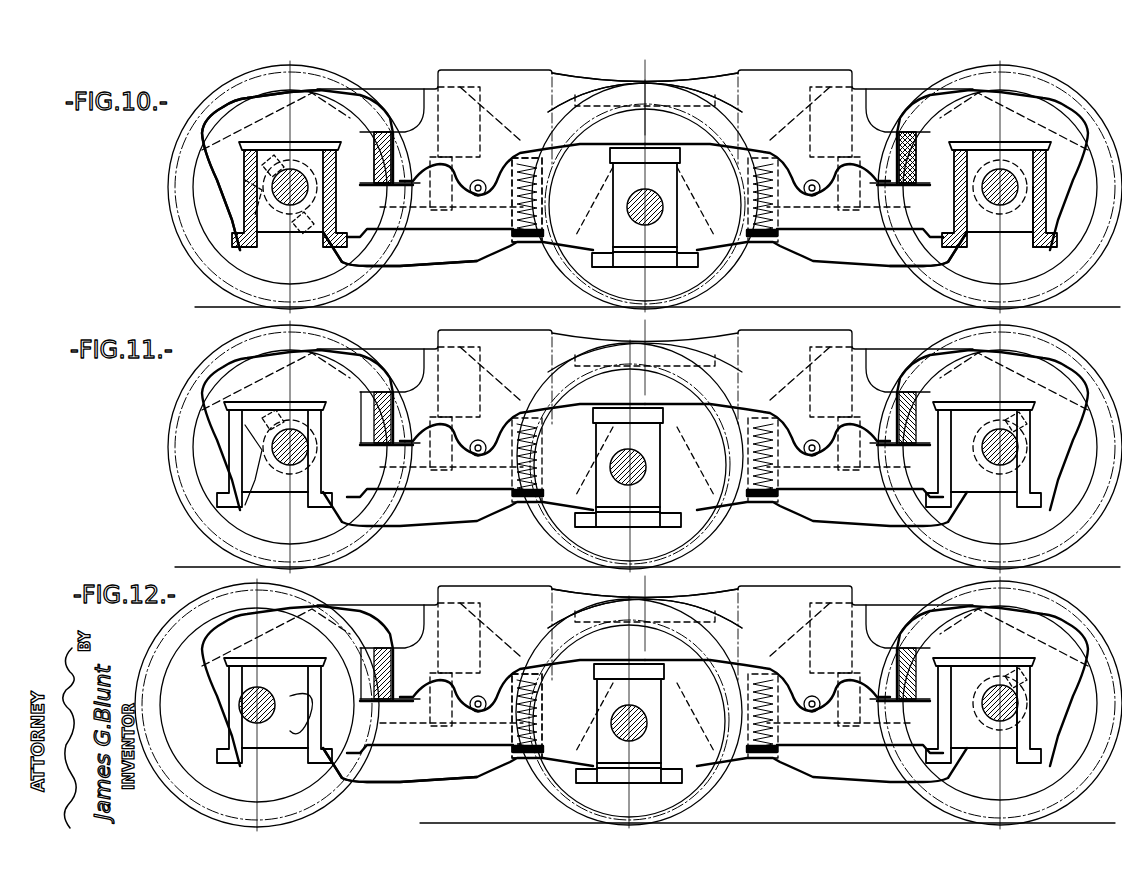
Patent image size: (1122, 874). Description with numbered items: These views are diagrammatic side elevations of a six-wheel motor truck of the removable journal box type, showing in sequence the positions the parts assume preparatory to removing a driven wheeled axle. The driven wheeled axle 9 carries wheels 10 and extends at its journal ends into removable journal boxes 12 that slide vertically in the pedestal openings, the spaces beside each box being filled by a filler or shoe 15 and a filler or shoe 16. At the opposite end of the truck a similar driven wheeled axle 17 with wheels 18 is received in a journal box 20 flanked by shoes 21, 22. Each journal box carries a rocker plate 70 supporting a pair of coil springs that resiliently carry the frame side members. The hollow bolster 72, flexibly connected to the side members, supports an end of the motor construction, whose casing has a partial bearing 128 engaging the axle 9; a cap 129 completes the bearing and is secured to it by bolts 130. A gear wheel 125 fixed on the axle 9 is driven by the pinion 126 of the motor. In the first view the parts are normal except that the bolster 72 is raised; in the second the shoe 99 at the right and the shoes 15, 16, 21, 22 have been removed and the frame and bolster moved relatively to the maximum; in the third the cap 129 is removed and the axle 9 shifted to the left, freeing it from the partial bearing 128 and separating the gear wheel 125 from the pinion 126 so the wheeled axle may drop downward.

In FIG. 10, the driven wheeled axle 9 is at (305, 187).
In FIG. 12, the driven wheeled axle 9 is at (237, 701).
In FIG. 10, the wheels 10 is at (237, 157).
In FIG. 12, the removable journal box 12 is at (250, 710).
In FIG. 10, the filler or shoe 15 is at (225, 258).
In FIG. 10, the filler or shoe 16 is at (355, 265).
In FIG. 10, the driven wheeled axle 17 is at (1043, 200).
In FIG. 10, the wheels 18 is at (1078, 266).
In FIG. 12, the journal box 20 is at (979, 741).
In FIG. 10, the filler or shoe 21 is at (945, 262).
In FIG. 10, the filler or shoe 22 is at (1030, 250).
In FIG. 11, the rocker plate 70 is at (633, 401).
In FIG. 12, the rocker plate 70 is at (1012, 656).
In FIG. 10, the bolster 72 is at (800, 74).
In FIG. 12, the bolster 72 is at (723, 599).
In FIG. 10, the shoe 99 is at (372, 140).
In FIG. 10, the gear wheel 125 is at (200, 232).
In FIG. 12, the gear wheel 125 is at (400, 785).
In FIG. 10, the gear wheel or pinion 126 is at (425, 225).
In FIG. 12, the gear wheel or pinion 126 is at (470, 724).
In FIG. 10, the partial bearing 128 is at (292, 150).
In FIG. 12, the partial bearing 128 is at (287, 744).
In FIG. 10, the cap 129 is at (245, 180).
In FIG. 11, the cap 129 is at (264, 481).
In FIG. 10, the bolts 130 is at (250, 170).